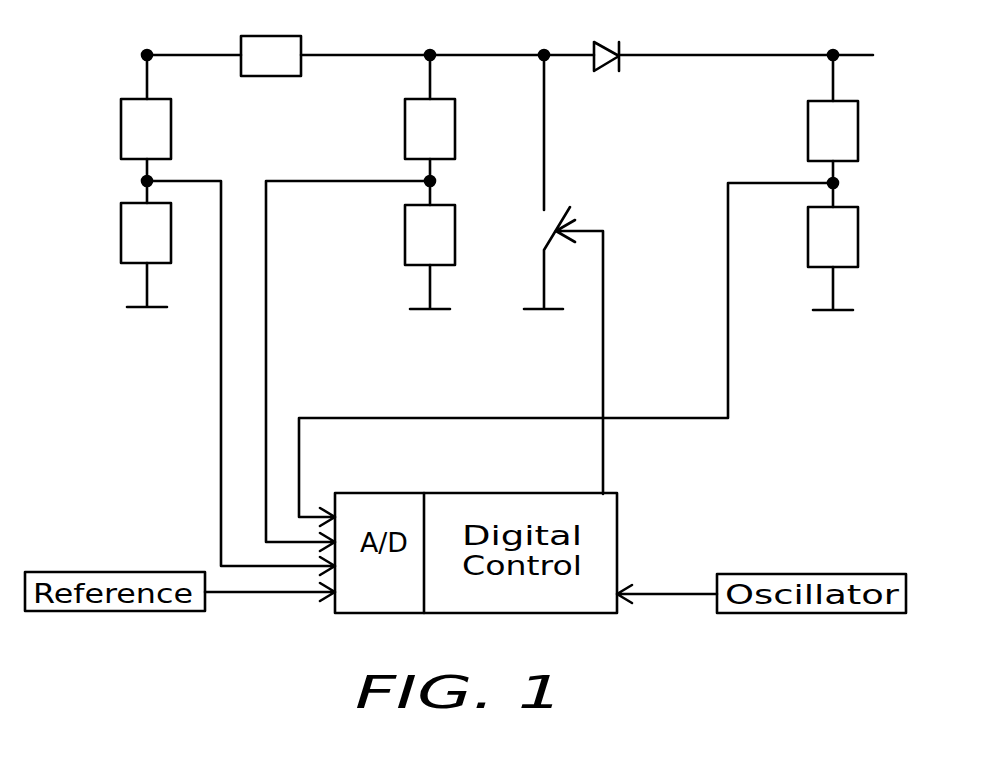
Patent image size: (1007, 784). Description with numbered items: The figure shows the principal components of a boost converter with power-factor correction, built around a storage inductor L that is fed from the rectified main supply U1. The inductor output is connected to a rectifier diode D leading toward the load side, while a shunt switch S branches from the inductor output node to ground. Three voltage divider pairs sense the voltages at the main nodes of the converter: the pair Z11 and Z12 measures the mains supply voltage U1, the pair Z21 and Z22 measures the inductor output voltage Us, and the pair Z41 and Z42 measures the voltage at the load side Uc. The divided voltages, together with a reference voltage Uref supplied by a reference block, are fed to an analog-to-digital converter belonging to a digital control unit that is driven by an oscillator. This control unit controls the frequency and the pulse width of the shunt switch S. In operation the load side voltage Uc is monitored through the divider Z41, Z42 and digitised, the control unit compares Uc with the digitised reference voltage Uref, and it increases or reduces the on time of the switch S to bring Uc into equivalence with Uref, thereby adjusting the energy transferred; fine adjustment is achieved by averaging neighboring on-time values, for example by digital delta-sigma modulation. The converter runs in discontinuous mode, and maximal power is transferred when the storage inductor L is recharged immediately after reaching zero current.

The rectified main supply U1 is at (147, 55).
The storage inductor L is at (271, 56).
The voltage divider impedance Z11 is at (146, 151).
The voltage divider impedance Z12 is at (146, 255).
The voltage divider impedance Z21 is at (430, 130).
The voltage divider impedance Z22 is at (430, 257).
The inductor output voltage Us is at (544, 52).
The shunt switch S is at (540, 229).
The rectifier diode D is at (597, 67).
The load side voltage Uc is at (878, 45).
The voltage divider impedance Z41 is at (833, 154).
The voltage divider impedance Z42 is at (833, 258).
The reference voltage Uref is at (269, 592).